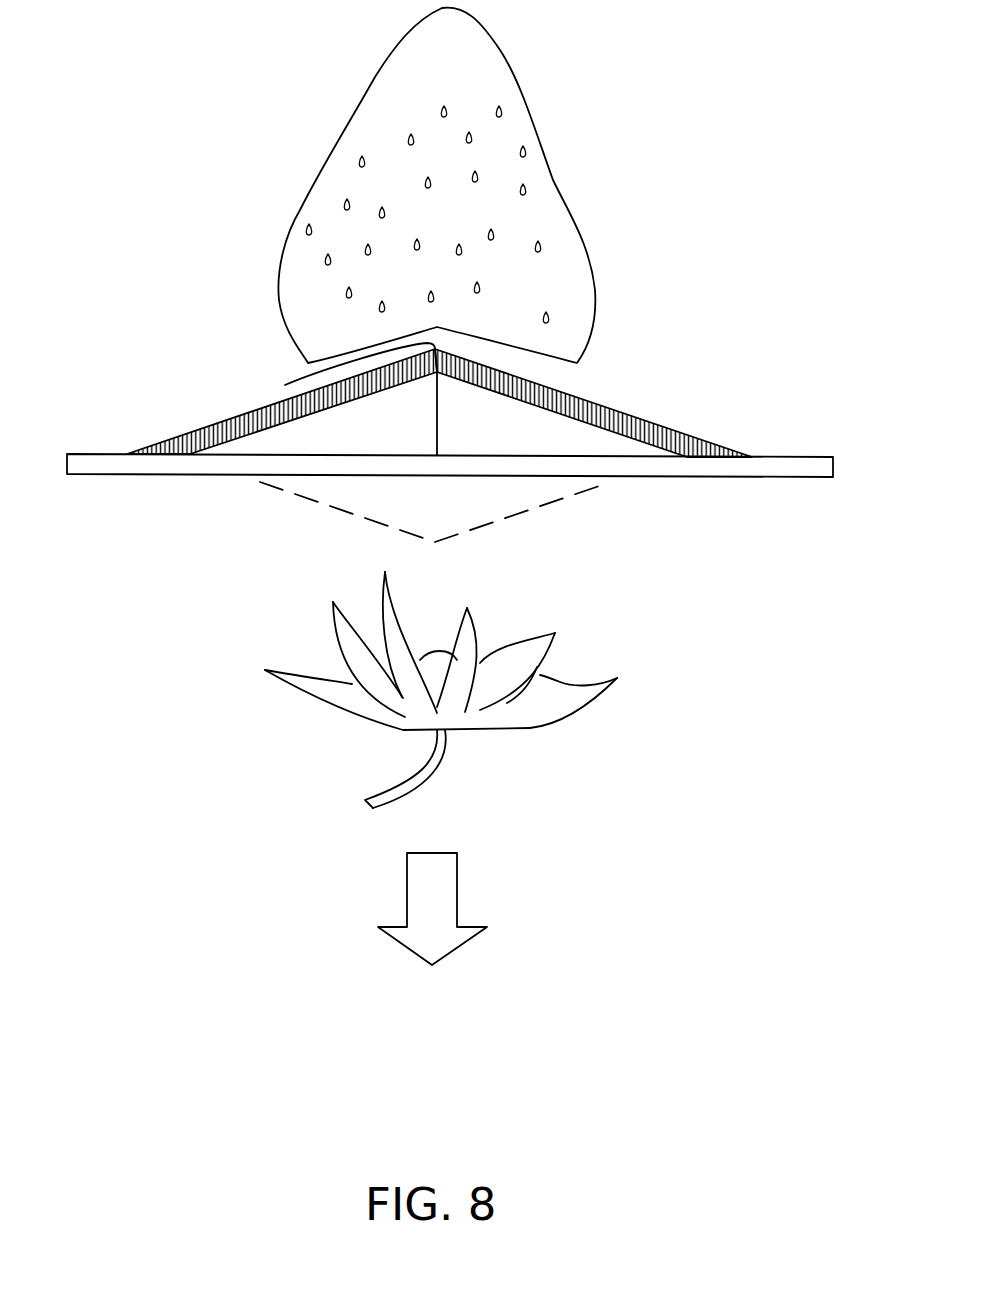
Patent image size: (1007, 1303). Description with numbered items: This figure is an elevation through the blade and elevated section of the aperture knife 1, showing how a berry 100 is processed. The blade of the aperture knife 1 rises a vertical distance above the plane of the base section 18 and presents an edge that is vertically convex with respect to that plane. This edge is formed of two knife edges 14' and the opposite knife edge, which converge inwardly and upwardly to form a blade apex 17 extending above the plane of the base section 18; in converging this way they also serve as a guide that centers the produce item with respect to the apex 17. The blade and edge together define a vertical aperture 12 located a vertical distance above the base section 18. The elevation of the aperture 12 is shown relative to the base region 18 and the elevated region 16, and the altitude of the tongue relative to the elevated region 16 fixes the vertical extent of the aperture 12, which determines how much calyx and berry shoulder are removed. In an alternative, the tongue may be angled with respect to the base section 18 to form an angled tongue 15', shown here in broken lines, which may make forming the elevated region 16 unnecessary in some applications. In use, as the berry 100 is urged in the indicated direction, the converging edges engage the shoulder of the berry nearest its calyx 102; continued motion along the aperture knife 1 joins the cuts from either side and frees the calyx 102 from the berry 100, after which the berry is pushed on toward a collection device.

The berry 100 is at (532, 127).
The aperture knife 1 is at (478, 454).
The base section 18 is at (98, 475).
The knife edge 14' is at (257, 401).
The blade apex 17 is at (307, 382).
The elevated region 16 is at (307, 440).
The aperture 12 is at (598, 440).
The tongue 15' is at (457, 533).
The calyx 102 is at (345, 720).